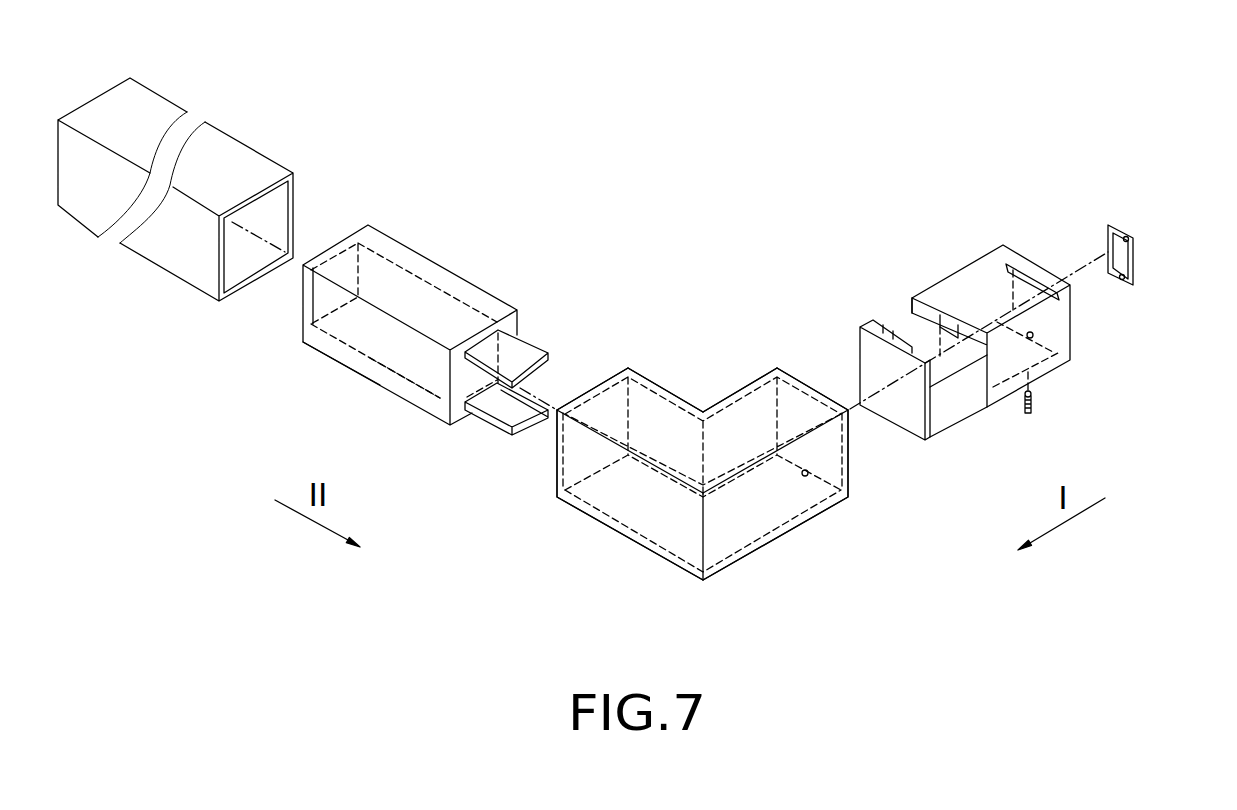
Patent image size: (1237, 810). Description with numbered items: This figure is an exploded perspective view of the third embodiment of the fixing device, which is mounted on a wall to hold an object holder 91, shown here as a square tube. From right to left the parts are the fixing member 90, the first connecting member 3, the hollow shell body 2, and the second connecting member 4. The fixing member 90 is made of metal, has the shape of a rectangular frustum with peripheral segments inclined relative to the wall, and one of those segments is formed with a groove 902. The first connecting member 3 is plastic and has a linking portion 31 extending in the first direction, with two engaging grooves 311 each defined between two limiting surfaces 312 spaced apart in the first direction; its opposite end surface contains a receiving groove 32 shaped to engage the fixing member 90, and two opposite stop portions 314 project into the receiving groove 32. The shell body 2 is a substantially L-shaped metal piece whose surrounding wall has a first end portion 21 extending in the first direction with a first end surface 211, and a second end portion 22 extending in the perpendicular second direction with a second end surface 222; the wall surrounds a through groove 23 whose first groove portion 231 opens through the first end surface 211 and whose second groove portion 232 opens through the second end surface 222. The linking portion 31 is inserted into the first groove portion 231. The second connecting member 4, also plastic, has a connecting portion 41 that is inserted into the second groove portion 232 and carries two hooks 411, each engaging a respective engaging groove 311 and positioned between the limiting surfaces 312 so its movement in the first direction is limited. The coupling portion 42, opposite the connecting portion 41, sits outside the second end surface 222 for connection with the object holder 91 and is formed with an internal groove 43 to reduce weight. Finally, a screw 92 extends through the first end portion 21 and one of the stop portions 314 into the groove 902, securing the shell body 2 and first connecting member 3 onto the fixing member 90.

The object holder 91 is at (257, 132).
The second connecting member 4 is at (425, 238).
The connecting portion 41 is at (523, 350).
The hooks 411 is at (500, 405).
The coupling portion 42 is at (337, 350).
The internal groove 43 is at (400, 377).
The shell body 2 is at (770, 557).
The first end portion 21 is at (815, 515).
The second end portion 22 is at (603, 523).
The through groove 23 is at (663, 523).
The first end surface 211 is at (810, 380).
The second end surface 222 is at (603, 383).
The first groove portion 231 is at (747, 405).
The second groove portion 232 is at (662, 417).
The first connecting member 3 is at (1022, 229).
The linking portion 31 is at (917, 333).
The engaging grooves 311 is at (955, 412).
The limiting surfaces 312 is at (885, 327).
The receiving groove 32 is at (1070, 337).
The stop portions 314 is at (1042, 268).
The fixing member 90 is at (1136, 215).
The groove 902 is at (1118, 285).
The screw 92 is at (1051, 415).